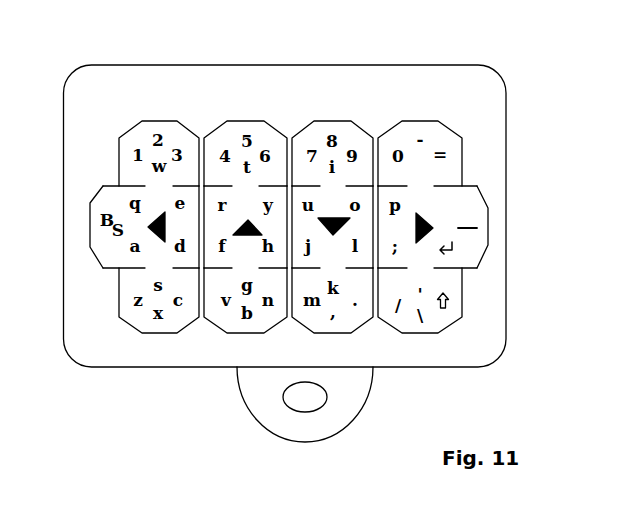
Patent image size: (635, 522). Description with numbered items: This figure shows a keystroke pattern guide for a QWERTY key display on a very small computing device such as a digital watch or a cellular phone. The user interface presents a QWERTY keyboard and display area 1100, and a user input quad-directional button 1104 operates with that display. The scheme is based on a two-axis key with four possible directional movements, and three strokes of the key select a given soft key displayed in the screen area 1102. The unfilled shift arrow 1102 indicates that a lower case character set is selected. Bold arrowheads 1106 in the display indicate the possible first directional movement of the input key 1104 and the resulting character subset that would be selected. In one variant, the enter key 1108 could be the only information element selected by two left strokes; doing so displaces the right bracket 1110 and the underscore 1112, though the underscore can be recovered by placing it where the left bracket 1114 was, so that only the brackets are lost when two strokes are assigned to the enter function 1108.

The QWERTY keyboard and display area 1100 is at (488, 150).
The shift arrow 1102 is at (458, 321).
The quad-directional button 1104 is at (322, 410).
The bold arrowheads 1106 is at (423, 212).
The enter key 1108 is at (447, 250).
The right bracket 1110 is at (447, 207).
The underscore 1112 is at (478, 230).
The left bracket 1114 is at (420, 163).